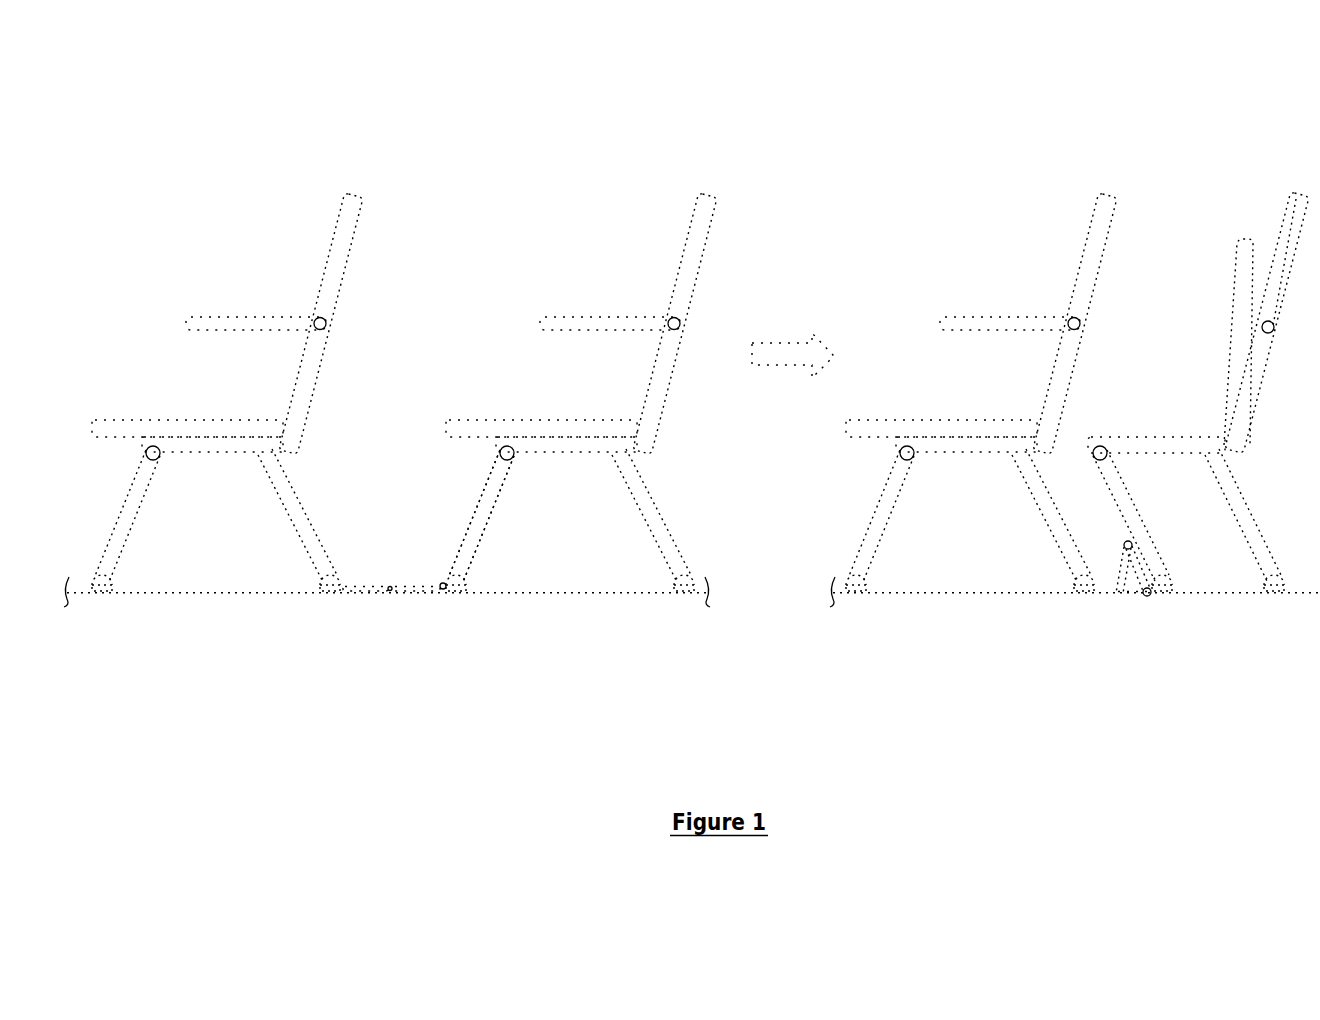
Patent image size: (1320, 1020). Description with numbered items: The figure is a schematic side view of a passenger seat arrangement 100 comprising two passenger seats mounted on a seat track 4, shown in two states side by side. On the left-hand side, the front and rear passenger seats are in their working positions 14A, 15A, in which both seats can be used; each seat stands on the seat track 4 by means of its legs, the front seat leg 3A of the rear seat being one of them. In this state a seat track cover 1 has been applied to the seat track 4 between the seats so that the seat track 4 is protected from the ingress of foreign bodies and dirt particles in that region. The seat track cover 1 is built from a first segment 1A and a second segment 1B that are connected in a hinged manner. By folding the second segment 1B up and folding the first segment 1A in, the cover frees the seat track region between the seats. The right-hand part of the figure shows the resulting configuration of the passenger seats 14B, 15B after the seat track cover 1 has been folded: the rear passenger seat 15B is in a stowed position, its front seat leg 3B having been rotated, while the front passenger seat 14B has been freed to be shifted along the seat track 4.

The passenger seat arrangement 100 is at (350, 138).
The front passenger seat in working position 14A is at (225, 206).
The rear passenger seat in working position 15A is at (578, 206).
The front passenger seat in shifted configuration 14B is at (945, 206).
The rear passenger seat in stowed position 15B is at (1210, 206).
The seat track cover 1 is at (399, 564).
The first segment 1A is at (368, 597).
The second segment 1B is at (436, 597).
The front seat leg 3A is at (483, 537).
The front seat leg (rotated) 3B is at (1149, 546).
The seat track 4 is at (80, 597).